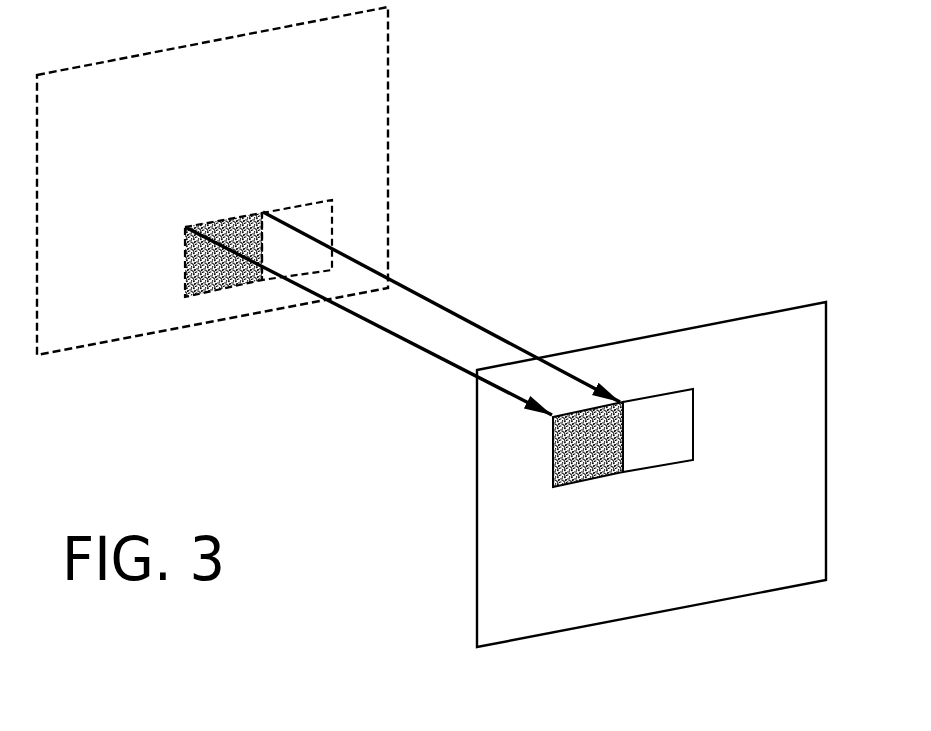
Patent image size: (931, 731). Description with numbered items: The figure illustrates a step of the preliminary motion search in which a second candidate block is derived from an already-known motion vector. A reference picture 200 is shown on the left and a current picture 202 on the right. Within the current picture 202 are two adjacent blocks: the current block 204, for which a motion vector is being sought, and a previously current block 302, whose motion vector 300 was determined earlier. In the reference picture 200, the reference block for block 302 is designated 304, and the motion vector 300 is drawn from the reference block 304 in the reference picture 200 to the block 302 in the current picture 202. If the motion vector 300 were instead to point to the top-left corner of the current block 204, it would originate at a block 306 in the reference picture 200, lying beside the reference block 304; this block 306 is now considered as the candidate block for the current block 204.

The reference picture 200 is at (95, 67).
The current picture 202 is at (682, 328).
The current block 204 is at (679, 442).
The motion vector 300 is at (450, 307).
The previously current block 302 is at (608, 455).
The reference block 304 is at (212, 222).
The candidate block 306 is at (303, 202).